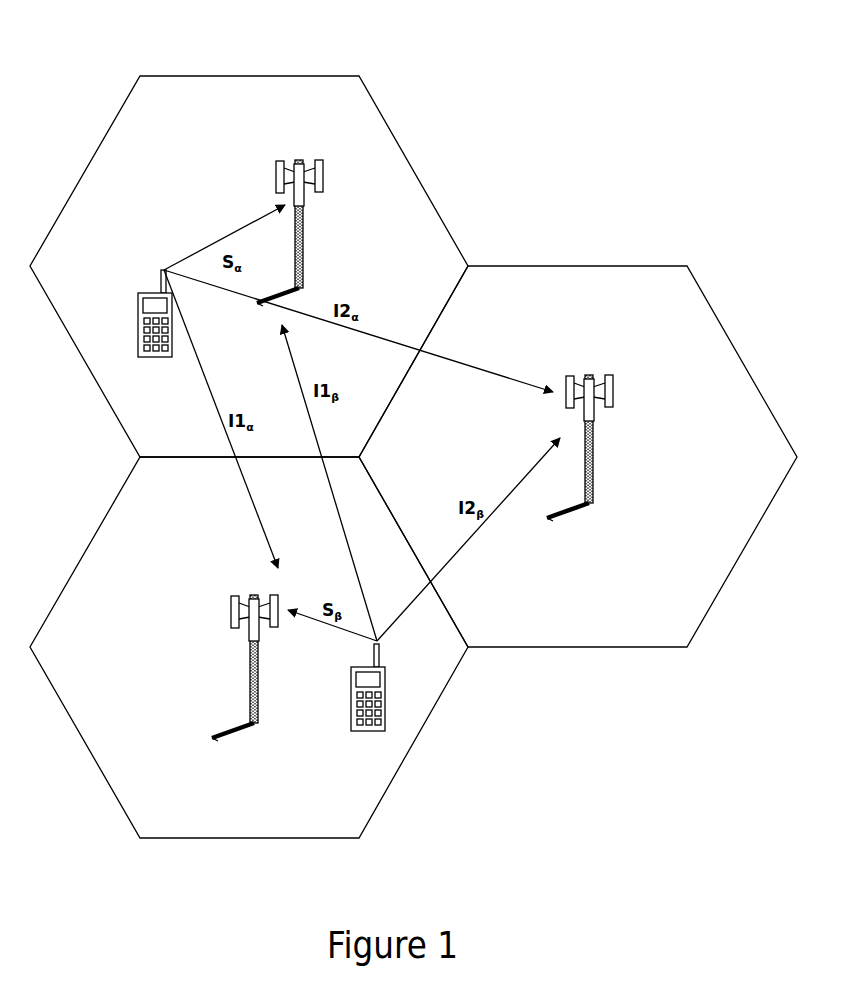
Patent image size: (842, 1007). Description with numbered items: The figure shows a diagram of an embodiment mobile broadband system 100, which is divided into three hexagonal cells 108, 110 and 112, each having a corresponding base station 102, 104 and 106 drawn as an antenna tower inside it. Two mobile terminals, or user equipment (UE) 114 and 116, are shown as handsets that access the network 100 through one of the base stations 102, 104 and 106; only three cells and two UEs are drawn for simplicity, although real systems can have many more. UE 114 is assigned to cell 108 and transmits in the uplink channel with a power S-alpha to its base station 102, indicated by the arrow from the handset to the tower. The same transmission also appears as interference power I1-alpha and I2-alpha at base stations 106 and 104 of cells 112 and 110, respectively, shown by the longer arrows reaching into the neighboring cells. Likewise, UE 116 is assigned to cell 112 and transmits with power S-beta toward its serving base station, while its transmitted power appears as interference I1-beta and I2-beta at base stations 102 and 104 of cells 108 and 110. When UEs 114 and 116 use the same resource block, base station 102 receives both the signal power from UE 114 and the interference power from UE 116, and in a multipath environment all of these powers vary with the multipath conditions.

The mobile broadband system 100 is at (176, 48).
The base station 102 is at (305, 279).
The base station 104 is at (595, 482).
The base station 106 is at (258, 688).
The cell 108 is at (249, 266).
The cell 110 is at (578, 456).
The cell 112 is at (249, 647).
The user equipment 114 is at (135, 338).
The user equipment 116 is at (386, 717).